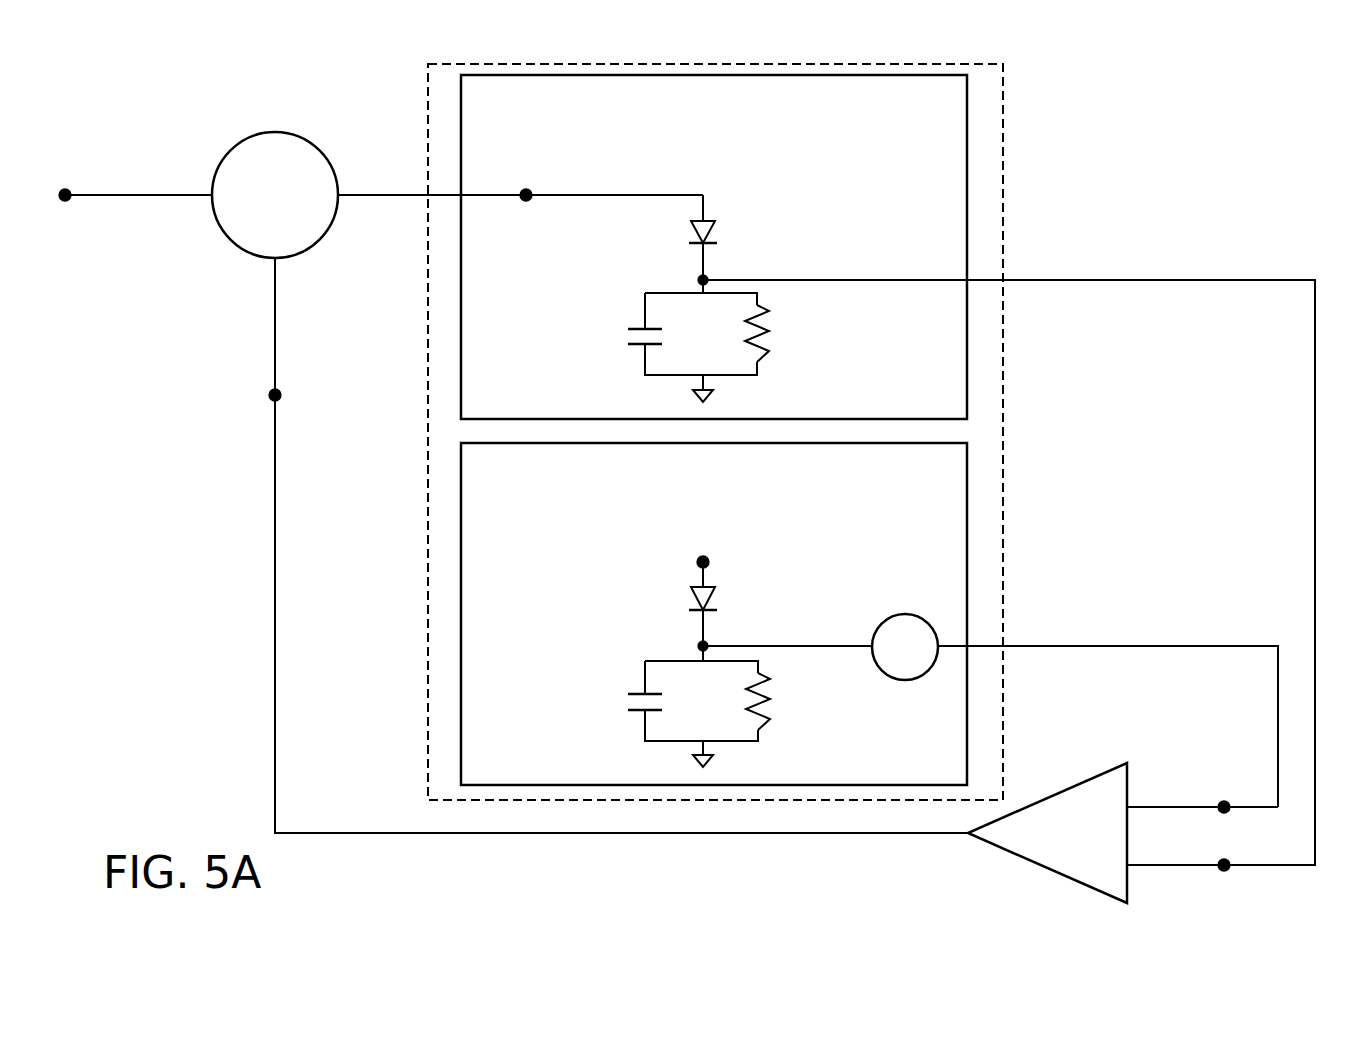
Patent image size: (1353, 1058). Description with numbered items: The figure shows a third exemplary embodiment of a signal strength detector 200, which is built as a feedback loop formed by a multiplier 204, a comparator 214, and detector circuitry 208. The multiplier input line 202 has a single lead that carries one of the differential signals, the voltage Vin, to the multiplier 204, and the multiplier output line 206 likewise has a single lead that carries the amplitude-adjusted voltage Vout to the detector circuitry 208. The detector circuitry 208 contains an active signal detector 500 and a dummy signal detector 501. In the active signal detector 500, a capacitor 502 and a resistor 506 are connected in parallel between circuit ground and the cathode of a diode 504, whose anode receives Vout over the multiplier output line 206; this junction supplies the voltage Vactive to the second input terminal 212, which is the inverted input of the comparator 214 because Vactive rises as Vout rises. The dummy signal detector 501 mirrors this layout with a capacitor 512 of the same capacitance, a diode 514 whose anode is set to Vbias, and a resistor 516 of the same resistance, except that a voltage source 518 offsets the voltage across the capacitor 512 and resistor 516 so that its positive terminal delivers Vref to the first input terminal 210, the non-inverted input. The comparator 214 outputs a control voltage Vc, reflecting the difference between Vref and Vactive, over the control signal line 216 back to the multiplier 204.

The signal strength detector 200 is at (1225, 168).
The multiplier input line 202 is at (143, 175).
The multiplier 204 is at (270, 131).
The multiplier output line 206 is at (352, 177).
The detector circuitry 208 is at (1025, 130).
The first input terminal 210 is at (1157, 792).
The second input terminal 212 is at (1137, 867).
The comparator 214 is at (1010, 858).
The control signal line 216 is at (283, 819).
The active signal detector 500 is at (934, 122).
The dummy signal detector 501 is at (936, 486).
The capacitor 502 is at (583, 337).
The diode 504 is at (718, 227).
The resistor 506 is at (812, 333).
The capacitor 512 is at (583, 703).
The diode 514 is at (720, 593).
The resistor 516 is at (812, 703).
The voltage source 518 is at (923, 608).